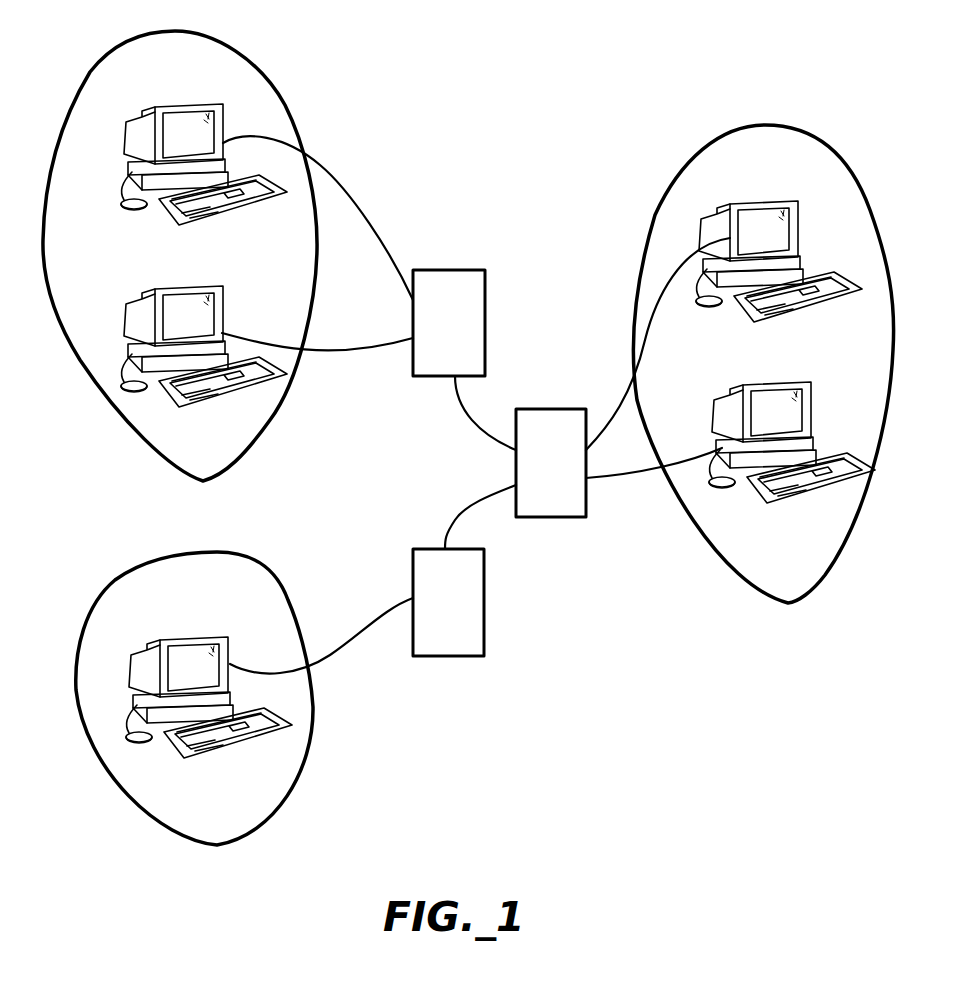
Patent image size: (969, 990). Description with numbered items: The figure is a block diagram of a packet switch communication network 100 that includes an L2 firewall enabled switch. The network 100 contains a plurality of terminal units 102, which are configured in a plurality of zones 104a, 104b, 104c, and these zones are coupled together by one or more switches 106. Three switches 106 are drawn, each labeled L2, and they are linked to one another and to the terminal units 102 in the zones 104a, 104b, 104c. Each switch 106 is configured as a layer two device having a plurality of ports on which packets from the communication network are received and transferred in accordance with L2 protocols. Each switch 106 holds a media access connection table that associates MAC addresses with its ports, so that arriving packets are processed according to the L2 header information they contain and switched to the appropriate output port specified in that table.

The packet switch communication network 100 is at (612, 65).
The terminal unit 102 is at (180, 100).
The zone 104a is at (212, 31).
The zone 104b is at (778, 125).
The zone 104c is at (185, 553).
The switch 106 is at (432, 268).